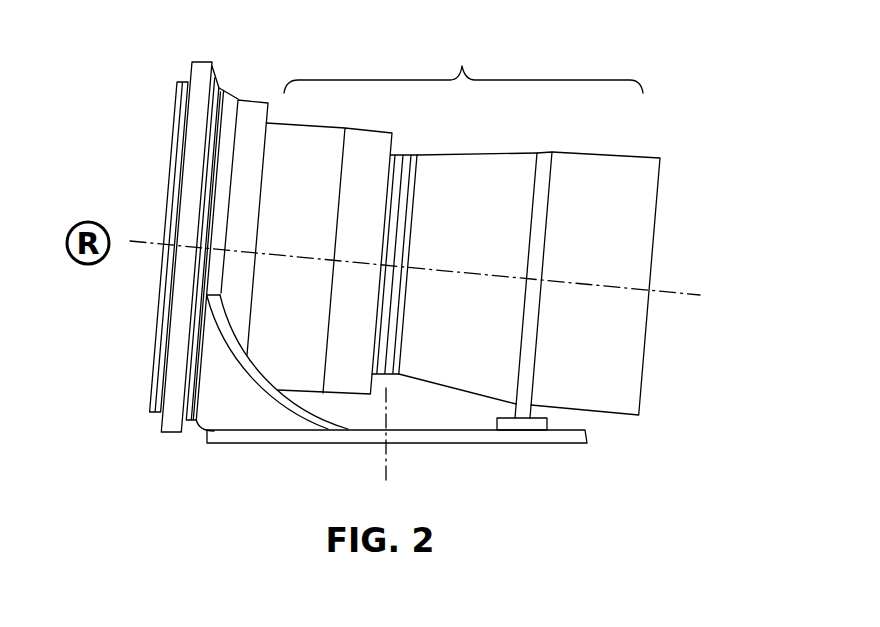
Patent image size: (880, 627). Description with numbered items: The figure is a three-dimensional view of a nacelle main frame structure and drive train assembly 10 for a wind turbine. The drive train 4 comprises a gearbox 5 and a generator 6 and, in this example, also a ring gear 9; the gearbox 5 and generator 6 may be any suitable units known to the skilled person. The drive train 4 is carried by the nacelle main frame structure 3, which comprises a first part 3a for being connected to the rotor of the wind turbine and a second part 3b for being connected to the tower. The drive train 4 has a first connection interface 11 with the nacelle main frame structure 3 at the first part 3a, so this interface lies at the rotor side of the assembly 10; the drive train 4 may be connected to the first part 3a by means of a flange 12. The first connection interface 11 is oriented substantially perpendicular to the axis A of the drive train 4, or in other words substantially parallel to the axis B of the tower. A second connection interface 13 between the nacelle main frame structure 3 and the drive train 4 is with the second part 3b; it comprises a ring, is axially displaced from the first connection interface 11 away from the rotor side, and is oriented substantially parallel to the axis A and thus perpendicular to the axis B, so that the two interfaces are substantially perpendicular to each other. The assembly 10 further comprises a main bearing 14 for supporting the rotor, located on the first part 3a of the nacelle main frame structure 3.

The nacelle main frame structure 3 is at (208, 404).
The first part of the nacelle main frame structure 3a is at (212, 73).
The second part of the nacelle main frame structure 3b is at (346, 433).
The drive train 4 is at (463, 64).
The gearbox 5 is at (472, 173).
The generator 6 is at (588, 172).
The ring gear 9 is at (303, 140).
The nacelle main frame structure and drive train assembly 10 is at (678, 110).
The first connection interface 11 is at (242, 98).
The flange 12 is at (248, 124).
The second connection interface 13 is at (540, 432).
The main bearing 14 is at (165, 351).
The axis of the drive train A is at (415, 287).
The axis of the tower B is at (404, 437).